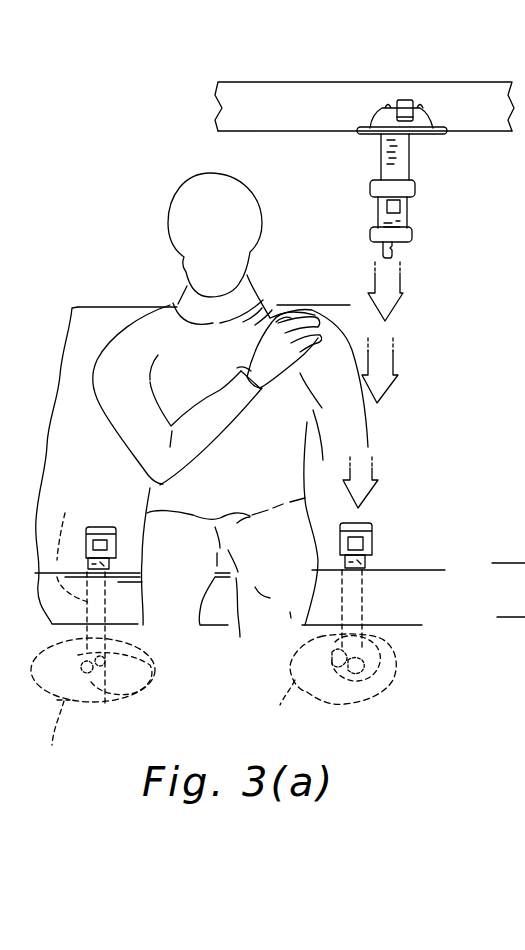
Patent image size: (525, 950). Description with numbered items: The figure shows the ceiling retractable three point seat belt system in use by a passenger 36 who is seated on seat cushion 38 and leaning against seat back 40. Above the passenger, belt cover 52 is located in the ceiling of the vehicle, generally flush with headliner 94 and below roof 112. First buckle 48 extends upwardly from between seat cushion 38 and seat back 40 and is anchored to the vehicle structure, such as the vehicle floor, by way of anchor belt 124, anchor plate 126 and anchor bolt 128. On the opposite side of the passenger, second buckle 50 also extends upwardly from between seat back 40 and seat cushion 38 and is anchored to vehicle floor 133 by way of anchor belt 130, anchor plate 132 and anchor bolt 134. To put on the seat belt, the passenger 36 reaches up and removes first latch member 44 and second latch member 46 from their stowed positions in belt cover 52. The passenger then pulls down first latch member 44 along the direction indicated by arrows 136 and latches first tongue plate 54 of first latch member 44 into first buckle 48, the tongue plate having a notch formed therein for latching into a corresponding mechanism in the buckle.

The roof 112 is at (452, 80).
The headliner 94 is at (305, 132).
The belt cover 52 is at (438, 134).
The second latch member 46 is at (415, 195).
The first latch member 44 is at (413, 235).
The first tongue plate 54 is at (378, 252).
The arrows 136 is at (393, 362).
The passenger 36 is at (182, 189).
The seat back 40 is at (99, 326).
The seat cushion 38 is at (407, 568).
The second buckle 50 is at (117, 517).
The anchor belt 130 is at (74, 543).
The anchor bolt 134 is at (112, 654).
The anchor plate 132 is at (150, 668).
The vehicle floor 133 is at (173, 726).
The first buckle 48 is at (372, 534).
The anchor belt 124 is at (363, 612).
The anchor plate 126 is at (397, 664).
The anchor bolt 128 is at (376, 695).